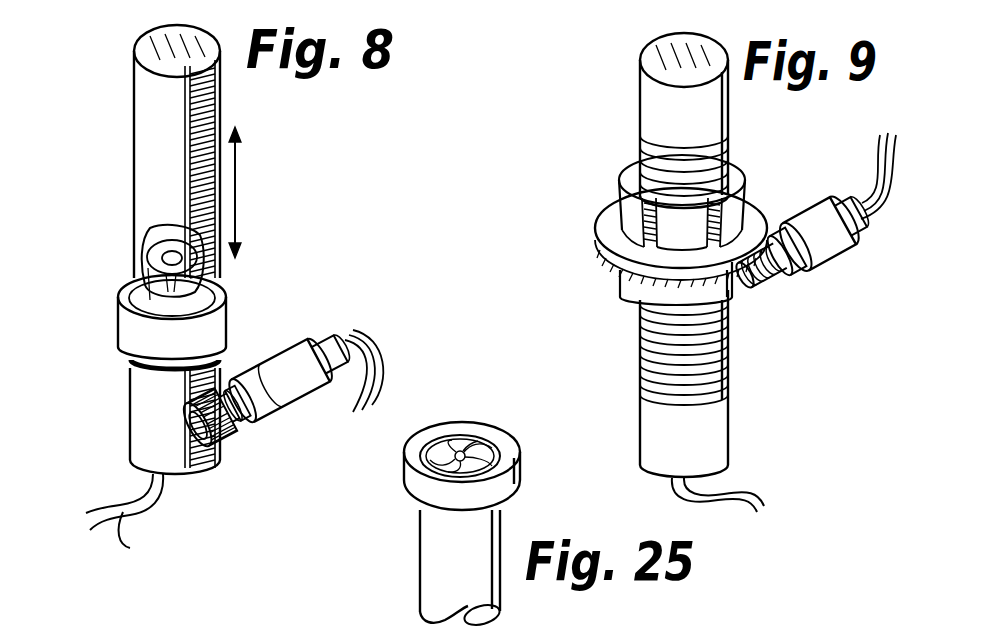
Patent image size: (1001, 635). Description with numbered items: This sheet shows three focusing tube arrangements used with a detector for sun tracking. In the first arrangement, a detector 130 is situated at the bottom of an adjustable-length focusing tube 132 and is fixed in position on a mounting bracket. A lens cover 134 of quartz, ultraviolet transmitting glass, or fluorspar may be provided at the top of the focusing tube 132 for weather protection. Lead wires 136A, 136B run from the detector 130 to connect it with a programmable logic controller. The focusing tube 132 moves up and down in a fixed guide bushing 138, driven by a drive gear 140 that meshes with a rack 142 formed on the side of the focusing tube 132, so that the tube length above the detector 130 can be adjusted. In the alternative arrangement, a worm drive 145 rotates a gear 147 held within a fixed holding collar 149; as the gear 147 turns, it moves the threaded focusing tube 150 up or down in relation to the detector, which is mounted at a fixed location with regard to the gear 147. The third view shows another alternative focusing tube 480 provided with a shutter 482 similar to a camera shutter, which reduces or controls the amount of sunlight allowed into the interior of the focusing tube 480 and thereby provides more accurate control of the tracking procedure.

In FIG. 8, the detector 130 is at (160, 246).
In FIG. 8, the focusing tube 132 is at (140, 140).
In FIG. 8, the lens cover 134 is at (140, 44).
In FIG. 8, the lead wire 136A is at (130, 549).
In FIG. 8, the lead wire 136B is at (103, 512).
In FIG. 8, the fixed guide bushing 138 is at (214, 326).
In FIG. 8, the drive gear 140 is at (232, 446).
In FIG. 8, the rack 142 is at (208, 95).
In FIG. 9, the worm drive 145 is at (782, 277).
In FIG. 9, the gear 147 is at (756, 196).
In FIG. 9, the fixed holding collar 149 is at (625, 212).
In FIG. 9, the threaded focusing tube 150 is at (730, 100).
In FIG. 25, the focusing tube 480 is at (420, 522).
In FIG. 25, the shutter 482 is at (492, 434).